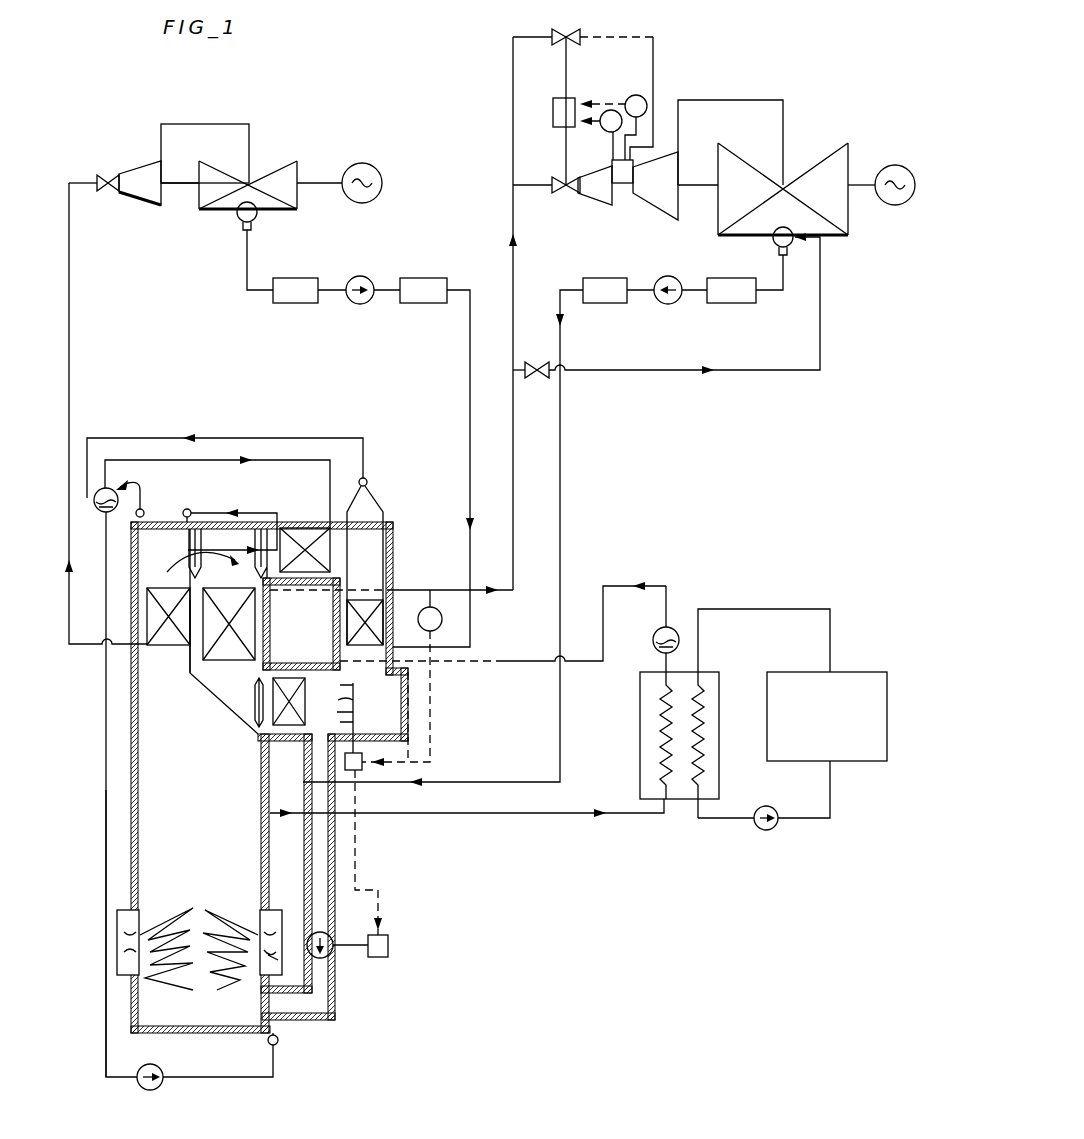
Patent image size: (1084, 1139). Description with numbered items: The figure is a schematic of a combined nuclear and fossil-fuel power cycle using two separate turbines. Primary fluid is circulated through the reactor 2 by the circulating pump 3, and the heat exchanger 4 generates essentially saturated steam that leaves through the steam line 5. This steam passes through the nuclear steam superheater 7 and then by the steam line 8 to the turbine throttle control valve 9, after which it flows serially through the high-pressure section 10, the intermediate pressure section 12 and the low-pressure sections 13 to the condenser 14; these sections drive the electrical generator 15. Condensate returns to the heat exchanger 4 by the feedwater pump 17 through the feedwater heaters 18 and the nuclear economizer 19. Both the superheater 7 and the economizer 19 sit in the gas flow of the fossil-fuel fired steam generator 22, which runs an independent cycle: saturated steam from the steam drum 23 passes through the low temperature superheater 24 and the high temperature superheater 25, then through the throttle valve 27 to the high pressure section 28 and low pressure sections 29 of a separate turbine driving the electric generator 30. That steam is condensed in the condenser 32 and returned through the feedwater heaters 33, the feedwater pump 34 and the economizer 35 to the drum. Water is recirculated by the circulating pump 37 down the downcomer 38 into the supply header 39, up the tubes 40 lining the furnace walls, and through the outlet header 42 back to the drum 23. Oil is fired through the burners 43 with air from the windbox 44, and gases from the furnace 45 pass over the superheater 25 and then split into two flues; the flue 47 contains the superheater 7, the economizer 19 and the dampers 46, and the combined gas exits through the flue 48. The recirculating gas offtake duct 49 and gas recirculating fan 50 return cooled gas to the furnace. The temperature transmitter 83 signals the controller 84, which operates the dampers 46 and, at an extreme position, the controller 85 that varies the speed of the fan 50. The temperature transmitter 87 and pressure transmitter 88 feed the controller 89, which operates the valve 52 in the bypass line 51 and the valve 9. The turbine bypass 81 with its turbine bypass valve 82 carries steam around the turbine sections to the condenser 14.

The reactor 2 is at (834, 734).
The circulating pump 3 is at (763, 832).
The heat exchanger 4 is at (719, 781).
The steam line 5 is at (668, 592).
The nuclear steam superheater 7 is at (250, 615).
The steam line 8 is at (513, 466).
The turbine throttle control valve 9 is at (556, 193).
The high-pressure section 10 is at (598, 192).
The intermediate pressure section 12 is at (662, 198).
The low-pressure sections 13 is at (718, 212).
The condenser 14 is at (772, 240).
The electrical generator 15 is at (894, 206).
The feedwater pump 17 is at (670, 305).
The feedwater heaters 18 is at (612, 303).
The nuclear economizer 19 is at (290, 681).
The fossil-fuel fired steam generator 22 is at (135, 1007).
The steam drum 23 is at (97, 509).
The low temperature superheater 24 is at (300, 535).
The high temperature superheater 25 is at (170, 641).
The throttle valve 27 is at (112, 178).
The high pressure section 28 is at (156, 204).
The low pressure sections 29 is at (238, 162).
The electric generator 30 is at (367, 165).
The condenser 32 is at (240, 221).
The feedwater heaters 33 is at (296, 303).
The feedwater pump 34 is at (360, 304).
The economizer 35 is at (365, 603).
The circulating pump 37 is at (150, 1092).
The downcomer 38 is at (106, 790).
The supply header 39 is at (280, 1044).
The tubes 40 is at (138, 930).
The outlet header 42 is at (143, 510).
The burners 43 is at (270, 958).
The windbox 44 is at (283, 967).
The furnace 45 is at (199, 930).
The dampers 46 is at (345, 703).
The flue 47 is at (230, 673).
The flue 48 is at (400, 714).
The recirculating gas offtake duct 49 is at (325, 863).
The gas recirculating fan 50 is at (332, 935).
The bypass line 51 is at (513, 37).
The valve 52 is at (572, 30).
The turbine bypass 81 is at (766, 372).
The turbine bypass valve 82 is at (546, 380).
The temperature transmitter 83 is at (438, 610).
The controller 84 is at (362, 760).
The controller 85 is at (390, 945).
The temperature transmitter 87 is at (636, 95).
The pressure transmitter 88 is at (605, 130).
The controller 89 is at (553, 112).